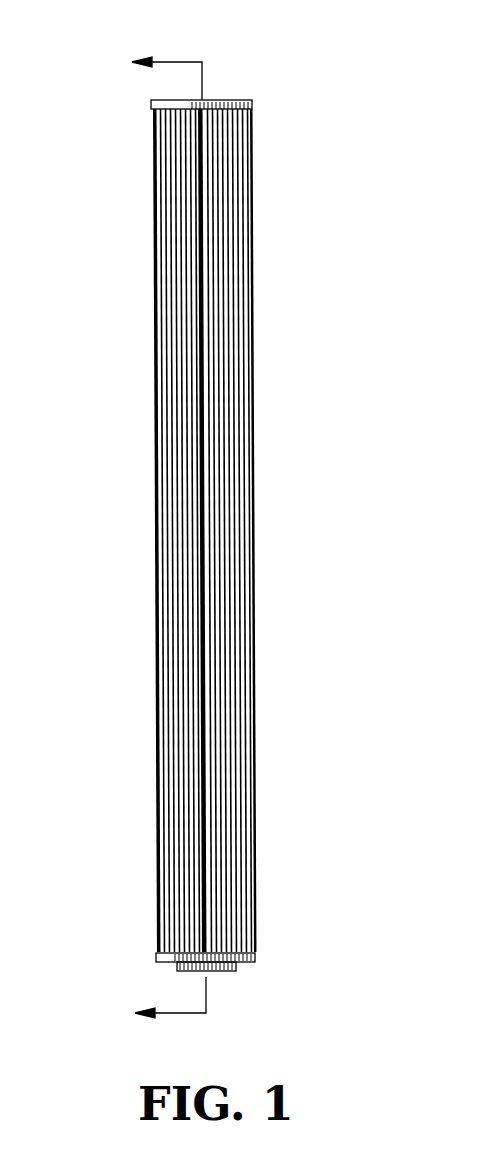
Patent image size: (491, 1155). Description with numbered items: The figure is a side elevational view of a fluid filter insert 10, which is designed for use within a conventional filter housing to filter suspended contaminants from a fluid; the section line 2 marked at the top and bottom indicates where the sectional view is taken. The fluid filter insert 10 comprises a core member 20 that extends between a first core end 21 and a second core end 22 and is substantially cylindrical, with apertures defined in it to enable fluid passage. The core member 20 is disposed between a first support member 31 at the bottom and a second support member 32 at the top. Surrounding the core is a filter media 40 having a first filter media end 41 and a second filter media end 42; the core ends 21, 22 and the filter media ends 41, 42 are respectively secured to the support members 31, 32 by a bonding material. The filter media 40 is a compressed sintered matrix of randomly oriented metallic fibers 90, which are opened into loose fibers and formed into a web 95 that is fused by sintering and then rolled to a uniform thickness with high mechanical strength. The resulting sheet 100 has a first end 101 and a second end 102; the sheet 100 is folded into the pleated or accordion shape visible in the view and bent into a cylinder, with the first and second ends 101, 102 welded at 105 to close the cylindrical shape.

The fluid filter insert 10 is at (242, 70).
The section line 2- 2 is at (155, 538).
The core member 20 is at (250, 235).
The first core end 21 is at (255, 920).
The second core end 22 is at (250, 127).
The first support member 31 is at (255, 962).
The second support member 32 is at (250, 105).
The filter media 40 is at (175, 330).
The first filter media end 41 is at (160, 940).
The second filter media end 42 is at (165, 118).
The metallic fibers 90 is at (158, 723).
The web 95 is at (235, 793).
The sheet 100 is at (238, 695).
The first end 101 is at (197, 548).
The second end 102 is at (200, 594).
The weld 105 is at (198, 398).